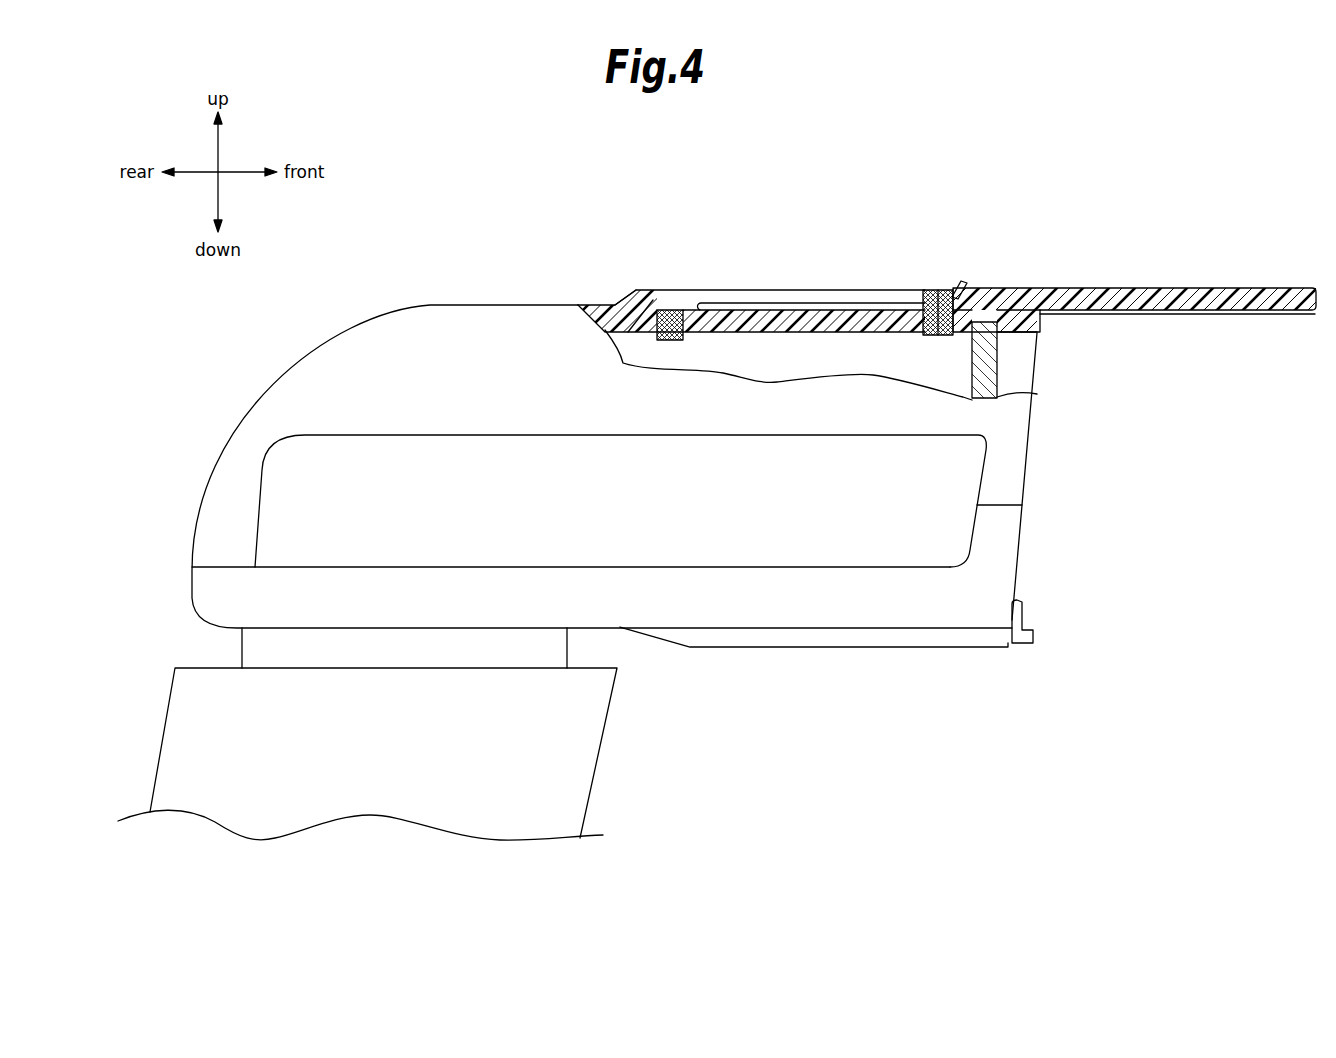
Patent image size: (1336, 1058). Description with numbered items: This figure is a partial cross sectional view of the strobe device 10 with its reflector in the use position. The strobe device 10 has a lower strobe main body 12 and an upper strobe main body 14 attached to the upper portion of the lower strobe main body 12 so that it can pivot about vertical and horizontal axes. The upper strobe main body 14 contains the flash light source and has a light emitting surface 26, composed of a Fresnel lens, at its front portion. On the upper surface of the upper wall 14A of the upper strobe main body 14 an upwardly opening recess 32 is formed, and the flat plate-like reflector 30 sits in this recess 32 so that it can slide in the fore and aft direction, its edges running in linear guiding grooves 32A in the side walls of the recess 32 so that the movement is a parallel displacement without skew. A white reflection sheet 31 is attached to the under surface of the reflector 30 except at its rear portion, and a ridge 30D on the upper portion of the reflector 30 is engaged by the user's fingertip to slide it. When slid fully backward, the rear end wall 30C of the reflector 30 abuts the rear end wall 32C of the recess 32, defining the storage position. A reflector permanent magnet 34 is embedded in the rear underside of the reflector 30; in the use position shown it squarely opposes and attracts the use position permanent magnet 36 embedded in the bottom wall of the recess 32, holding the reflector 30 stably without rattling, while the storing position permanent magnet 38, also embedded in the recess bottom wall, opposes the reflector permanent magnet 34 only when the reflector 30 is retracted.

The strobe device 10 is at (310, 306).
The lower strobe main body 12 is at (606, 741).
The upper strobe main body 14 is at (483, 300).
The upper wall 14A is at (782, 333).
The light emitting surface 26 is at (987, 365).
The reflector 30 is at (1157, 287).
The rear end wall 30C is at (927, 300).
The ridge 30D is at (958, 286).
The reflection sheet 31 is at (1237, 314).
The recess 32 is at (690, 296).
The linear guiding groove 32A is at (771, 308).
The rear end wall 32C is at (660, 304).
The reflector permanent magnet 34 is at (936, 302).
The use position permanent magnet 36 is at (975, 295).
The storing position permanent magnet 38 is at (670, 316).